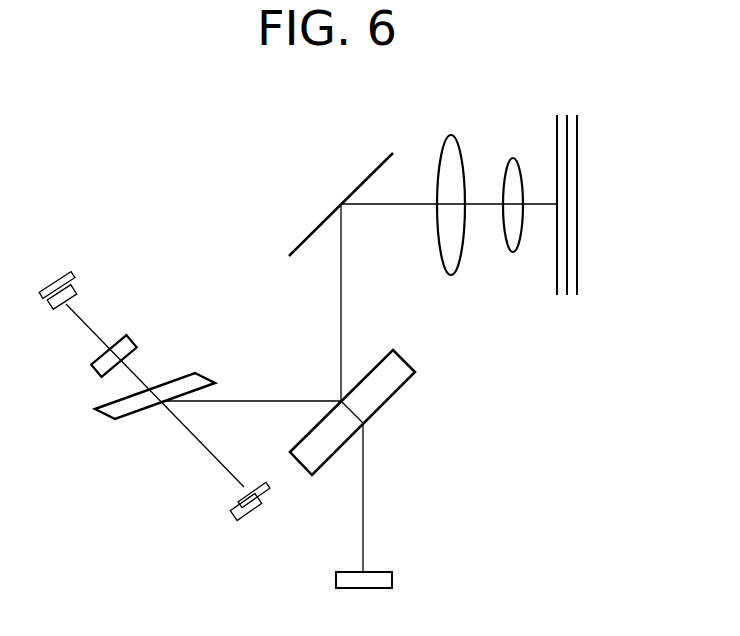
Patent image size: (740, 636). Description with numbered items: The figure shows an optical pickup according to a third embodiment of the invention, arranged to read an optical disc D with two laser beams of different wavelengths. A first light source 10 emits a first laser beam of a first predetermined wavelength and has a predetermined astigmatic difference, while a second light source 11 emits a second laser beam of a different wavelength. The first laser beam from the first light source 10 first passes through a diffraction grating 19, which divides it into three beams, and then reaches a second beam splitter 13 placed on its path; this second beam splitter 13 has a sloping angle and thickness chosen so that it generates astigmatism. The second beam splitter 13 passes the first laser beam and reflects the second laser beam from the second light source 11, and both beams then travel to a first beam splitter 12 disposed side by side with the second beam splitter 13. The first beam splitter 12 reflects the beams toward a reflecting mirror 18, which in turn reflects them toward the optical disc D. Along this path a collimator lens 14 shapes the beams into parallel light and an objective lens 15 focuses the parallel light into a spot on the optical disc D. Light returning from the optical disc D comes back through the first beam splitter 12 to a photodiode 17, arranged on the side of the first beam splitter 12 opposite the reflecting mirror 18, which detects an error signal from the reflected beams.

The first light source 10 is at (57, 272).
The second light source 11 is at (258, 508).
The first beam splitter 12 is at (385, 402).
The second beam splitter 13 is at (201, 352).
The collimator lens 14 is at (437, 262).
The objective lens 15 is at (505, 234).
The photodiode 17 is at (393, 580).
The reflecting mirror 18 is at (320, 222).
The diffraction grating 19 is at (133, 335).
The optical disc D is at (579, 247).